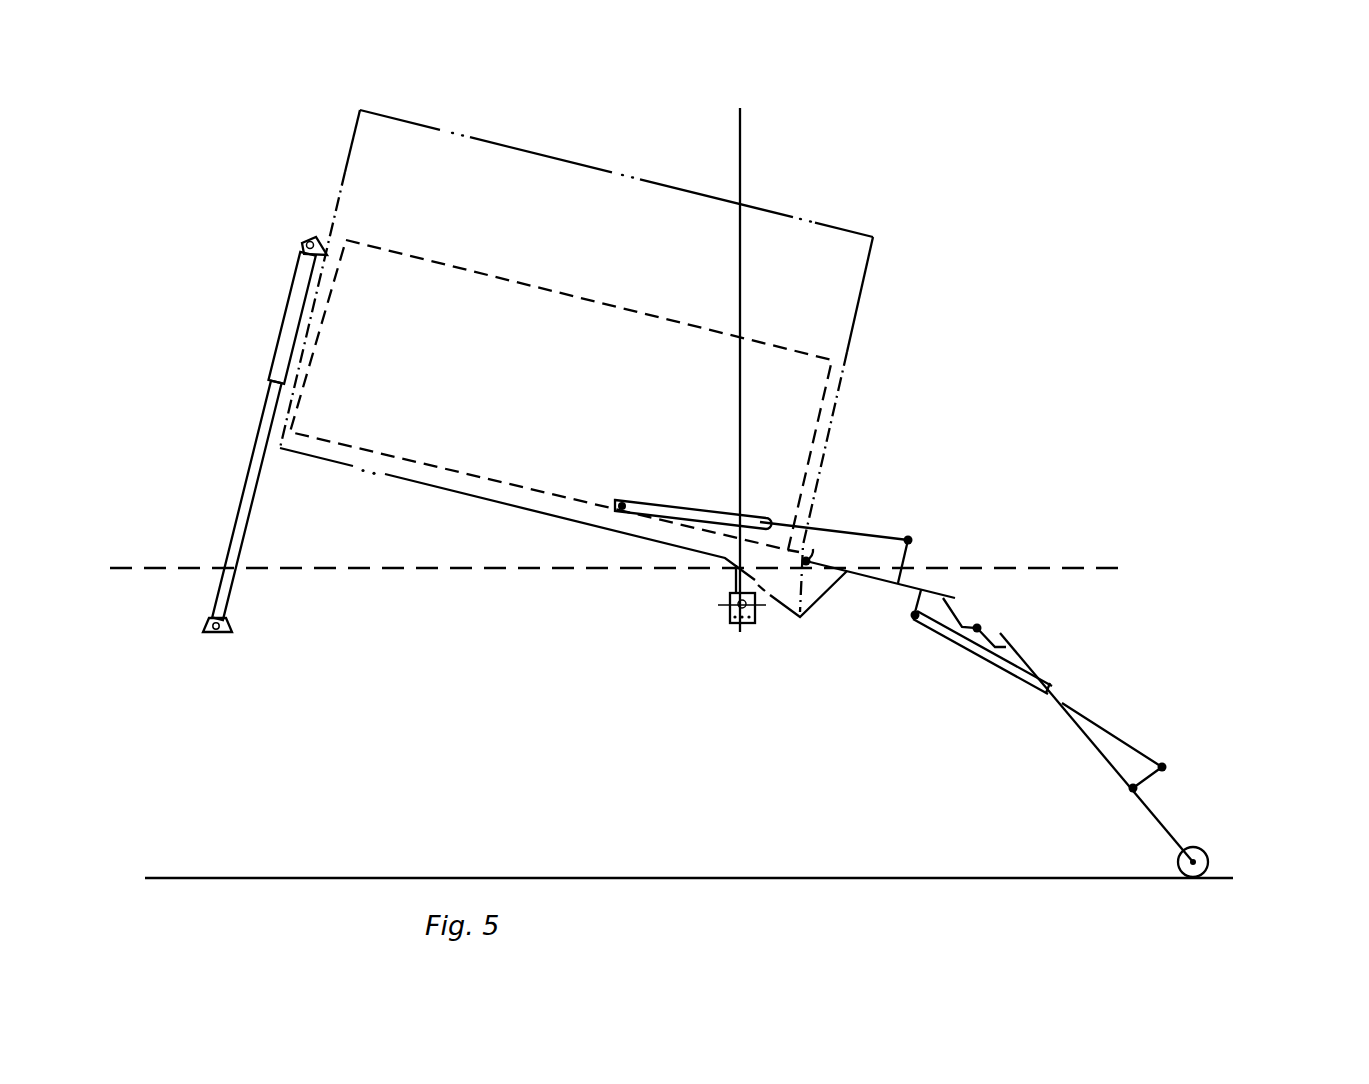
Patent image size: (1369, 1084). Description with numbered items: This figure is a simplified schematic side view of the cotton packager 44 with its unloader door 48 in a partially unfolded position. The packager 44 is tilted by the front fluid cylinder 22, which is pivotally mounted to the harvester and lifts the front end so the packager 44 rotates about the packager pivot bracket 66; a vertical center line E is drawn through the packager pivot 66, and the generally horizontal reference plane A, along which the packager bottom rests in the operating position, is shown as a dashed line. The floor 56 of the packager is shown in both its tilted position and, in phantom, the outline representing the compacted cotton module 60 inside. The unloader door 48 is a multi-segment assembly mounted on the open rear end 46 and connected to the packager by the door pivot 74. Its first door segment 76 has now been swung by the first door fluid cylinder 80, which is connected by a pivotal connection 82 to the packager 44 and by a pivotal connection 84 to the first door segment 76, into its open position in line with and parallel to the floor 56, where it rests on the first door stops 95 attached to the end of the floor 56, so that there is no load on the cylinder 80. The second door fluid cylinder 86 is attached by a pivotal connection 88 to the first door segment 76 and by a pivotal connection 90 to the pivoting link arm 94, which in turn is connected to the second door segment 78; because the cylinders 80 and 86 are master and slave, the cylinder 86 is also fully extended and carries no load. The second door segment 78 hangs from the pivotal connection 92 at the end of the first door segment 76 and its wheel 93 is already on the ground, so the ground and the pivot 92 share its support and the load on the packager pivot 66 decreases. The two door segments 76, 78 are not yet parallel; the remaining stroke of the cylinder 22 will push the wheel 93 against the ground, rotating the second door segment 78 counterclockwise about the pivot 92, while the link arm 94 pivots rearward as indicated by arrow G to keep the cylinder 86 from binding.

The front fluid cylinder 22 is at (243, 478).
The cotton packager 44 is at (628, 361).
The open rear end 46 is at (858, 312).
The unloader door 48 is at (1184, 829).
The floor 56 is at (413, 460).
The cotton module 60 is at (583, 300).
The packager pivot bracket 66 is at (730, 620).
The door pivot 74 is at (811, 553).
The first door segment 76 is at (878, 525).
The second door segment 78 is at (1168, 755).
The first door fluid cylinder 80 is at (670, 482).
The pivotal connection 82 is at (622, 503).
The pivotal connection 84 is at (911, 540).
The second door fluid cylinder 86 is at (959, 647).
The pivotal connection 88 is at (913, 618).
The pivotal connection 90 is at (1161, 763).
The pivotal connection 92 is at (978, 626).
The wheel 93 is at (1209, 862).
The pivoting link arm 94 is at (1147, 777).
The first door stops 95 is at (830, 588).
The vertical center line E is at (738, 125).
The reference plane A is at (357, 570).
The arrow G is at (1181, 743).